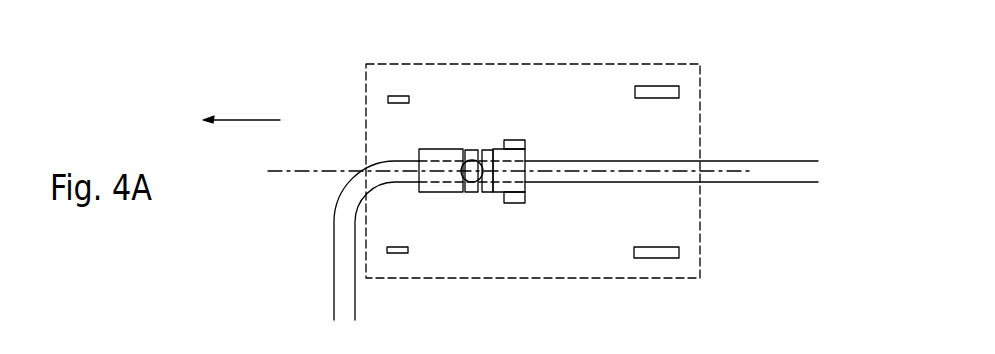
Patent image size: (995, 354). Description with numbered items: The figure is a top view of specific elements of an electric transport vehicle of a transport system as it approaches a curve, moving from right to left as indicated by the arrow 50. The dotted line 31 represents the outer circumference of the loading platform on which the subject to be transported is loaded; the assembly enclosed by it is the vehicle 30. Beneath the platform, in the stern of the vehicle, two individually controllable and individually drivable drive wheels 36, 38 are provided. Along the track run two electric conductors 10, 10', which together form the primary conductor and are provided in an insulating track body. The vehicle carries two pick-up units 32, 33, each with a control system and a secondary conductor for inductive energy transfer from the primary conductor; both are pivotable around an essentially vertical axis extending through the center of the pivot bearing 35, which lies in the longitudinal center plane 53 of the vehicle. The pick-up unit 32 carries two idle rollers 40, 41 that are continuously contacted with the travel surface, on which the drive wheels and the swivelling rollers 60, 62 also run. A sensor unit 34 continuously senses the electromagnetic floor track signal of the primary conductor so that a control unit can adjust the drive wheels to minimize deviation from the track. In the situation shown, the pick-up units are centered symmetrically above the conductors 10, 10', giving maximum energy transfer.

The electric conductor 10 is at (618, 138).
The electric conductor 10' is at (618, 210).
The guiding device 30 is at (611, 177).
The dotted line 31 is at (640, 278).
The pick-up unit 32 is at (495, 192).
The pick-up unit 33 is at (437, 192).
The sensor unit 34 is at (473, 192).
The pivot bearing 35 is at (485, 150).
The drive wheel 36 is at (672, 91).
The drive wheel 38 is at (672, 252).
The idle roller 40 is at (518, 197).
The idle roller 41 is at (522, 142).
The arrow 50 is at (241, 105).
The center plane 53 is at (290, 169).
The swivelling roller 60 is at (398, 96).
The swivelling roller 62 is at (392, 251).